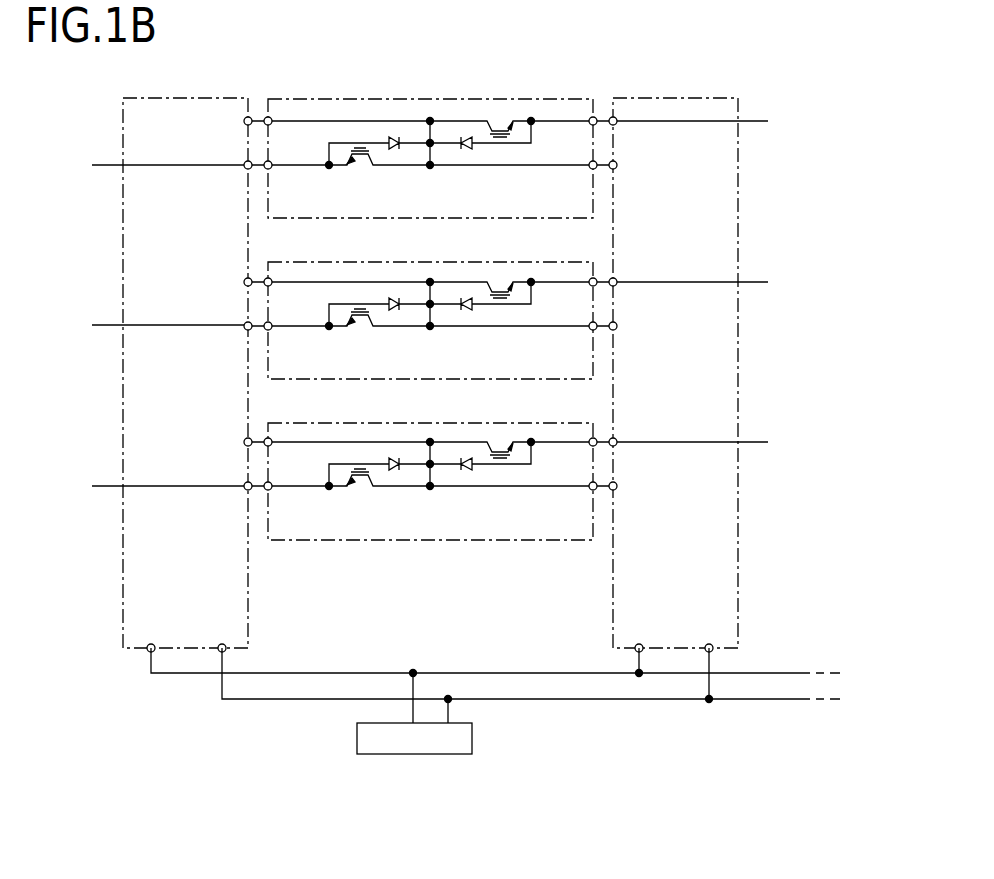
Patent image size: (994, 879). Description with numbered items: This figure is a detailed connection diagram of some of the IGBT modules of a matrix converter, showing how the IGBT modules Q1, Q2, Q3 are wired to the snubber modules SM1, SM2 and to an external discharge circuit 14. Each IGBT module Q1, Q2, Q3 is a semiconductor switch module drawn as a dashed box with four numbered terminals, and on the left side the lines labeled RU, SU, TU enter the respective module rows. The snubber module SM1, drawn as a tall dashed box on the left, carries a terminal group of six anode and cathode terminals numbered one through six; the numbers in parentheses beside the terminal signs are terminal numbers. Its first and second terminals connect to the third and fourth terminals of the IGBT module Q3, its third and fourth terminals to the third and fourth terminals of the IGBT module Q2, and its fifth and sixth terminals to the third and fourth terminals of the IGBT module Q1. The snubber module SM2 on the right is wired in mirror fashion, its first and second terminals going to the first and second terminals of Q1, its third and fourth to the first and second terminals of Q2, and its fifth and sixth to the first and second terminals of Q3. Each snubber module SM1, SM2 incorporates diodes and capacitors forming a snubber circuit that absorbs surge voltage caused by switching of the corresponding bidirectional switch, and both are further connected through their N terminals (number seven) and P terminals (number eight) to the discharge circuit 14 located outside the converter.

The discharge circuit 14 is at (472, 744).
The IGBT module Q1 is at (473, 467).
The IGBT module Q2 is at (473, 306).
The IGBT module Q3 is at (353, 97).
The snubber module SM1 is at (248, 623).
The snubber module SM2 is at (613, 618).
The R-phase input line RU is at (165, 151).
The S-phase input line SU is at (166, 312).
The T-phase input line TU is at (165, 473).